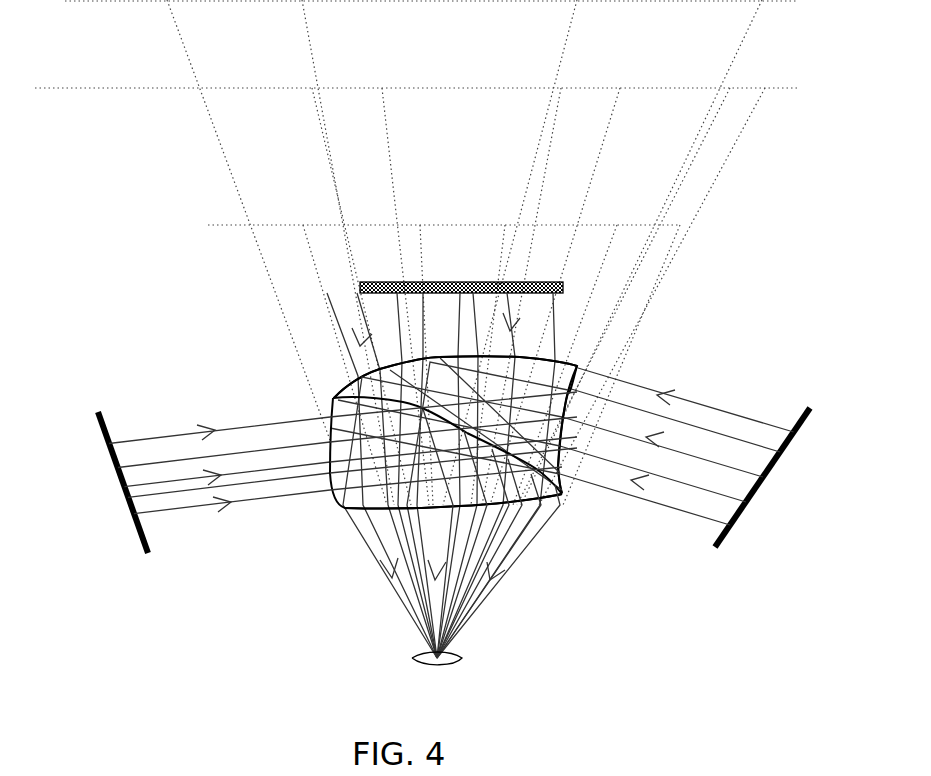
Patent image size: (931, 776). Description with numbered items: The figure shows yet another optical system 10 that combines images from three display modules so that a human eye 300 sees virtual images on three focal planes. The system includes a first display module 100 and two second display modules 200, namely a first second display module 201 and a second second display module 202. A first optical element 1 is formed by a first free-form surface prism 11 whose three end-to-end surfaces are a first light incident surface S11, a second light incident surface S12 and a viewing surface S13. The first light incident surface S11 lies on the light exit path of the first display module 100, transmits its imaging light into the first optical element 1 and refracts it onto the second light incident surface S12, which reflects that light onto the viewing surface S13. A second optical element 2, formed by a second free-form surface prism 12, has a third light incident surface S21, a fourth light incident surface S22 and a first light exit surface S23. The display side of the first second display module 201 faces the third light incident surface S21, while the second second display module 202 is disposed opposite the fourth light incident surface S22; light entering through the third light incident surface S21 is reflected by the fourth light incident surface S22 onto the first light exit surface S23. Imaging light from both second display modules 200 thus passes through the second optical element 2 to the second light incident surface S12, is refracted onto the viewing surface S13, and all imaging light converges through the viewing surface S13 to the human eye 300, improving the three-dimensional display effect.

The optical system 10 is at (68, 31).
The first display module 100 is at (100, 412).
The second display module 200 is at (608, 247).
The first second display module 201 is at (800, 422).
The second second display module 202 is at (530, 283).
The first optical element 1 is at (286, 548).
The first free-form surface prism 11 is at (345, 492).
The second optical element 2 is at (288, 308).
The second free-form surface prism 12 is at (397, 383).
The first light incident surface S11 is at (328, 410).
The second light incident surface S12 is at (562, 494).
The viewing surface S13 is at (520, 504).
The third light incident surface S21 is at (580, 392).
The fourth light incident surface S22 is at (565, 363).
The first light exit surface S23 is at (340, 386).
The human eye 300 is at (447, 655).